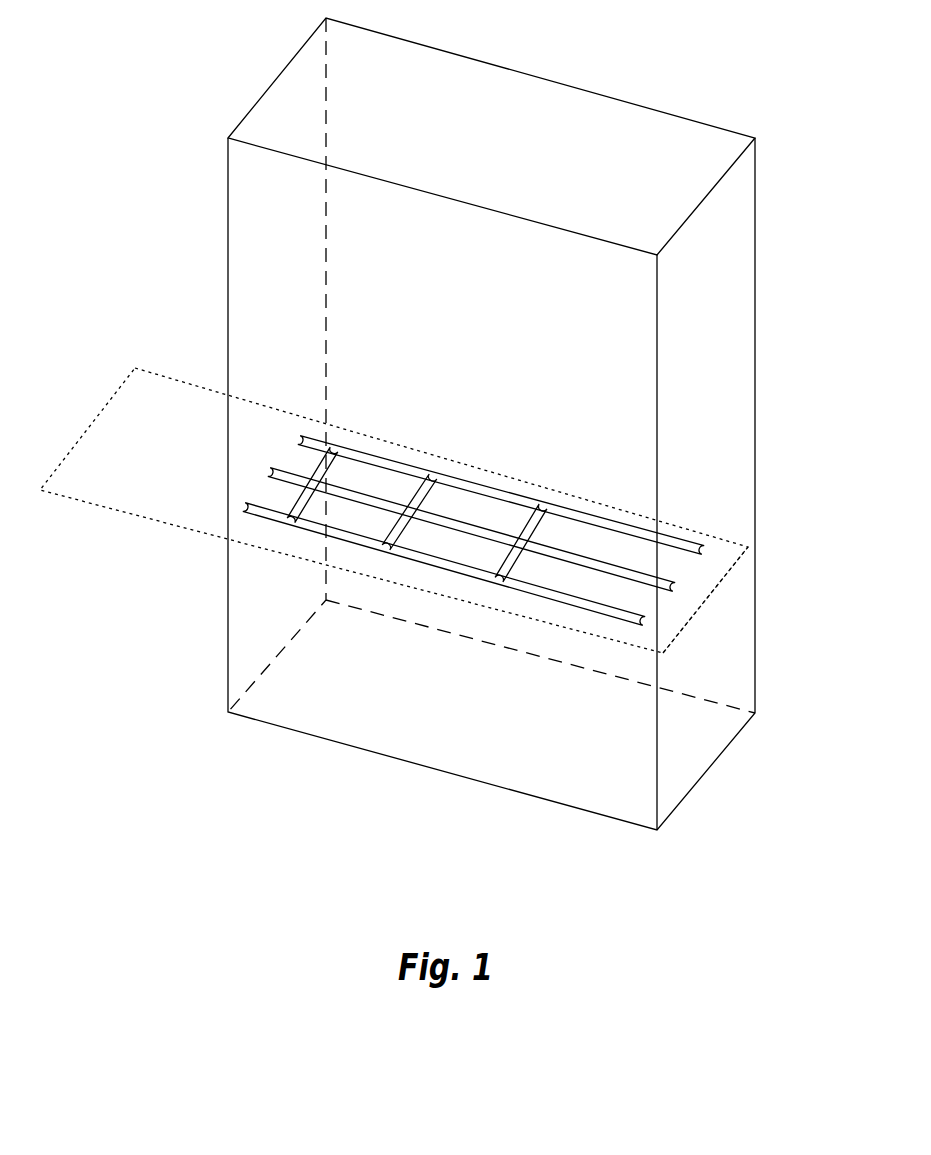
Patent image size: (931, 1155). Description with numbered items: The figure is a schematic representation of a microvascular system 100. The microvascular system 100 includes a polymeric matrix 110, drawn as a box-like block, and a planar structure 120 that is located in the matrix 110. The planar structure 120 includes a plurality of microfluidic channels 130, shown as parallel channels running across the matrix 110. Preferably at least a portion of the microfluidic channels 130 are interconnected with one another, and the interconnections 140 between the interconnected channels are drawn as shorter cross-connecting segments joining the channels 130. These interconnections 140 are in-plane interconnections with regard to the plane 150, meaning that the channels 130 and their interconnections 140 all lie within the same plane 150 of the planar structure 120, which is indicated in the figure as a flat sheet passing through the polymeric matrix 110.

The microvascular system 100 is at (451, 424).
The polymeric matrix 110 is at (253, 596).
The planar structure 120 is at (473, 511).
The microfluidic channels 130 is at (451, 510).
The interconnections 140 is at (441, 498).
The plane 150 is at (744, 556).